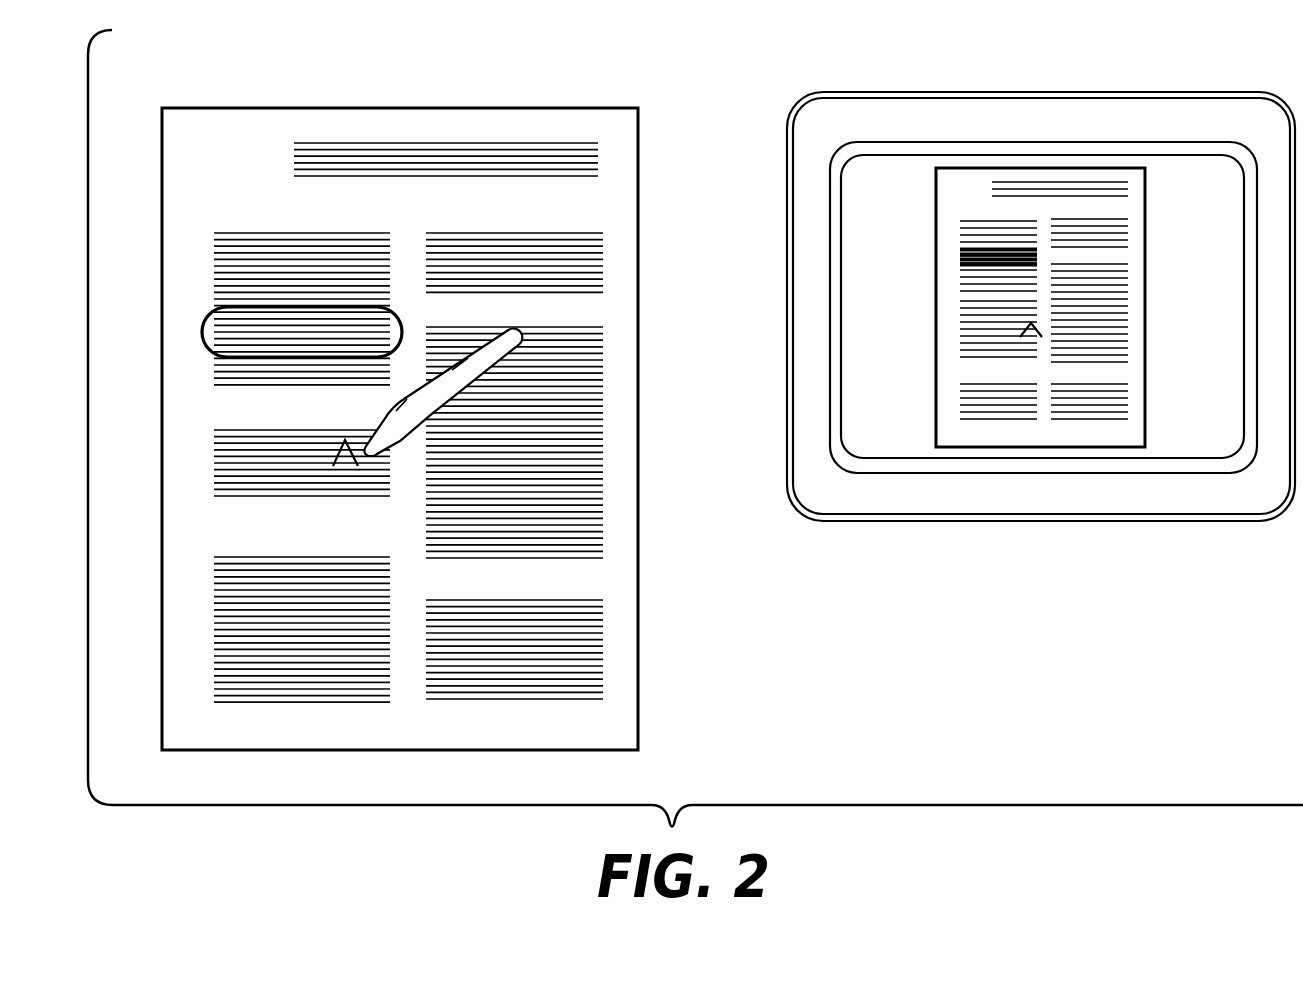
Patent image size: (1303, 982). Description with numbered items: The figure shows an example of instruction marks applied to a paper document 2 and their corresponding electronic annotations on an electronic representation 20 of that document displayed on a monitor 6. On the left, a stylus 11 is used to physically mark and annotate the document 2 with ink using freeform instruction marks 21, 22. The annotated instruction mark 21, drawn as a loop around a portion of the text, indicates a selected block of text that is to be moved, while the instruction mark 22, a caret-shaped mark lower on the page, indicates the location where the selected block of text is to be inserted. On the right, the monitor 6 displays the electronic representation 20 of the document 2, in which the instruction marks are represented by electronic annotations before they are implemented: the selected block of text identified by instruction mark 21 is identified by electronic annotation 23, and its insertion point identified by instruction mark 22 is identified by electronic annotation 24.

The document 2 is at (640, 644).
The monitor 6 is at (983, 92).
The stylus 11 is at (475, 372).
The electronic representation 20 is at (1144, 286).
The instruction mark 21 is at (227, 313).
The instruction mark 22 is at (335, 449).
The electronic annotation 23 is at (966, 262).
The electronic annotation 24 is at (1015, 332).